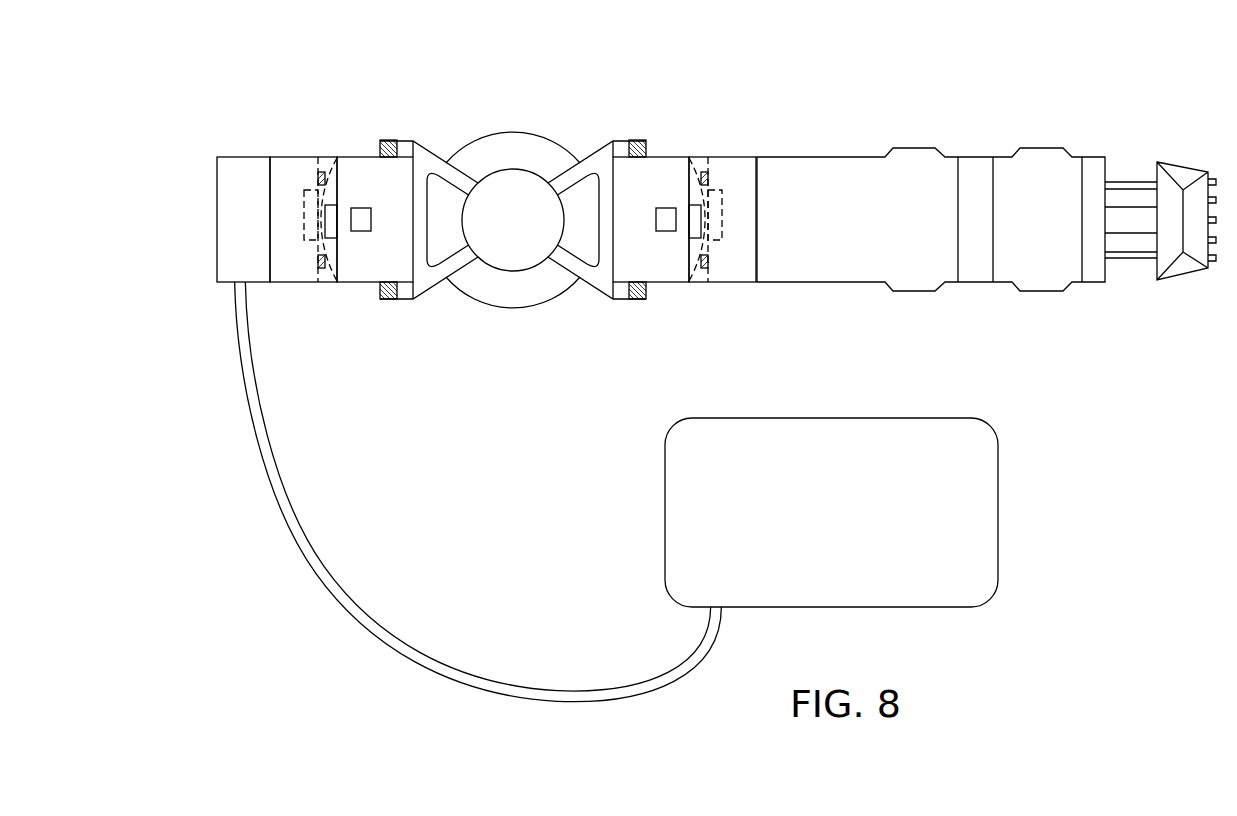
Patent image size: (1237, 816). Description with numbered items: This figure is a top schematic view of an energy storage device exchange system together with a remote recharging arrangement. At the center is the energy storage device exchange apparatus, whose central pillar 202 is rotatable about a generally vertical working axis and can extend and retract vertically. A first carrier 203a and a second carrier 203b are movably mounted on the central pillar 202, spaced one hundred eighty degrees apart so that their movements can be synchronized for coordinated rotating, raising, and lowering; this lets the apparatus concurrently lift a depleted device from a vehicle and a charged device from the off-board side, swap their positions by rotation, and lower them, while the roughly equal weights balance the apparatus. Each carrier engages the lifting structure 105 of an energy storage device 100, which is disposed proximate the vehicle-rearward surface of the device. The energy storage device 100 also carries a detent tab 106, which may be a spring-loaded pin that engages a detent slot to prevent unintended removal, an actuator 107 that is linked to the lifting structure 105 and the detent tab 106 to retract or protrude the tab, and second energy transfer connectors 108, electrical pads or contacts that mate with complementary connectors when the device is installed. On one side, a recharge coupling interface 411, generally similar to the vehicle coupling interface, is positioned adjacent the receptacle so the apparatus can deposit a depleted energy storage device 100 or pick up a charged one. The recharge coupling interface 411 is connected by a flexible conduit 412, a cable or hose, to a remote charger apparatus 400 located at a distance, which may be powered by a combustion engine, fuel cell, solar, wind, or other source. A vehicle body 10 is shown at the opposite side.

The power tool body 10 is at (886, 233).
The energy storage device 100 is at (397, 196).
The lifting structure 105 is at (387, 140).
The detent tab 106 is at (304, 190).
The actuator 107 is at (329, 240).
The second energy transfer connectors 108 is at (326, 157).
The central pillar 202 is at (555, 302).
The first carrier 203a is at (433, 154).
The second carrier 203b is at (593, 154).
The remote charger apparatus 400 is at (860, 527).
The recharge coupling interface 411 is at (216, 218).
The conduit 412 is at (333, 603).